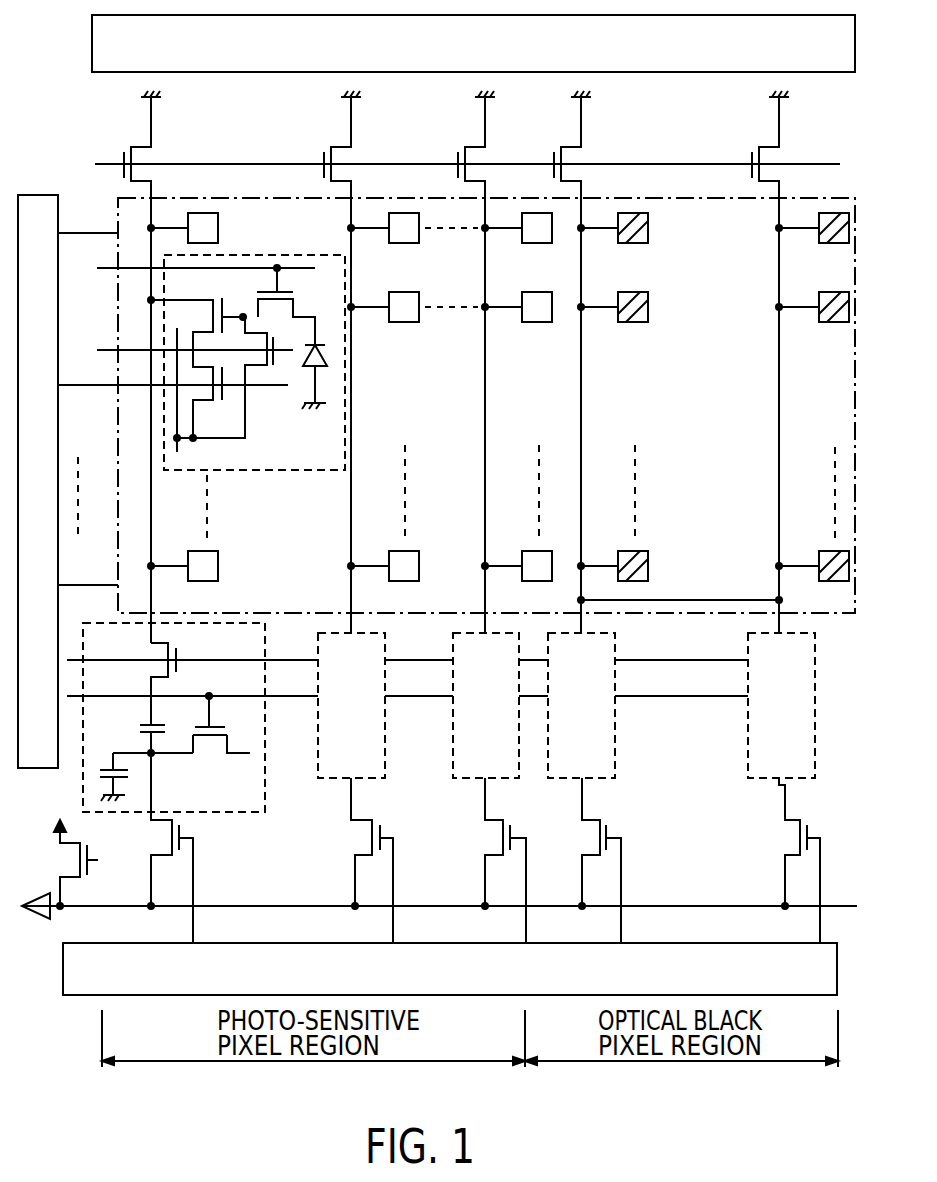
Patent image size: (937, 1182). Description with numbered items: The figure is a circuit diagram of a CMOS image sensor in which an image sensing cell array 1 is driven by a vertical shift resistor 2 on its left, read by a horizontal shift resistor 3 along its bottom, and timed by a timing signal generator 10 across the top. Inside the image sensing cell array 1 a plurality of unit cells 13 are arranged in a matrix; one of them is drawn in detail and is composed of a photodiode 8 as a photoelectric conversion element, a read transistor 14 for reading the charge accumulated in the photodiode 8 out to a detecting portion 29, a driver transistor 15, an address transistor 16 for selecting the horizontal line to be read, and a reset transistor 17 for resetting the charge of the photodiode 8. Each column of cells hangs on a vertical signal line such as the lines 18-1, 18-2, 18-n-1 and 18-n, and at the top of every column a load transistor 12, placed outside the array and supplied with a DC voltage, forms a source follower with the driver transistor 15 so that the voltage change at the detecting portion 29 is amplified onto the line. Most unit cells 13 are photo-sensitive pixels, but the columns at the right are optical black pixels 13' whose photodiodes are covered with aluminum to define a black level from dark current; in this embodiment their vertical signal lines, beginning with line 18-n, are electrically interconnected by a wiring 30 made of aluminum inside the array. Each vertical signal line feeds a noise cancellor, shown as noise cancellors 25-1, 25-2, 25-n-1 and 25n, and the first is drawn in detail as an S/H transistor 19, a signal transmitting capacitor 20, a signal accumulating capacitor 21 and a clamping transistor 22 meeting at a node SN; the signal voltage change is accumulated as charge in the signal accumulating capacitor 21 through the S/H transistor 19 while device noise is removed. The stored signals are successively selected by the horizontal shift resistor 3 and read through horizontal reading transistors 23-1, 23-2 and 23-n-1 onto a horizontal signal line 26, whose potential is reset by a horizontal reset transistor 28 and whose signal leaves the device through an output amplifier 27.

The timing signal generator 10 is at (92, 45).
The vertical shift resistor 2 is at (31, 194).
The image sensing cell array 1 is at (108, 220).
The load transistor 12 is at (123, 152).
The unit cell 13 is at (326, 396).
The optical black pixel 13' is at (713, 397).
The vertical signal line 18-1 is at (151, 298).
The vertical signal line 18-2 is at (352, 400).
The vertical signal line 18-n-1 is at (485, 385).
The vertical signal line 18-n is at (582, 400).
The wiring 30 is at (701, 600).
The read transistor 14 is at (293, 293).
The driver transistor 15 is at (222, 300).
The detecting portion 29 is at (243, 316).
The reset transistor 17 is at (274, 338).
The photodiode 8 is at (306, 360).
The address transistor 16 is at (222, 402).
The noise cancellor 25-1 is at (267, 762).
The noise cancellor 25-2 is at (386, 770).
The noise cancellor 25-n-1 is at (542, 786).
The noise cancellor 25n is at (618, 768).
The S/H transistor 19 is at (180, 648).
The signal transmitting capacitor 20 is at (144, 724).
The signal accumulating capacitor 21 is at (111, 766).
The clamping transistor 22 is at (240, 745).
The sample node SN is at (158, 757).
The horizontal reading transistor 23-1 is at (183, 830).
The horizontal reading transistor 23-2 is at (357, 838).
The horizontal reading transistor 23-n-1 is at (495, 838).
The horizontal signal line 26 is at (228, 905).
The output amplifier 27 is at (48, 912).
The horizontal reset transistor 28 is at (65, 859).
The horizontal shift resistor 3 is at (63, 970).